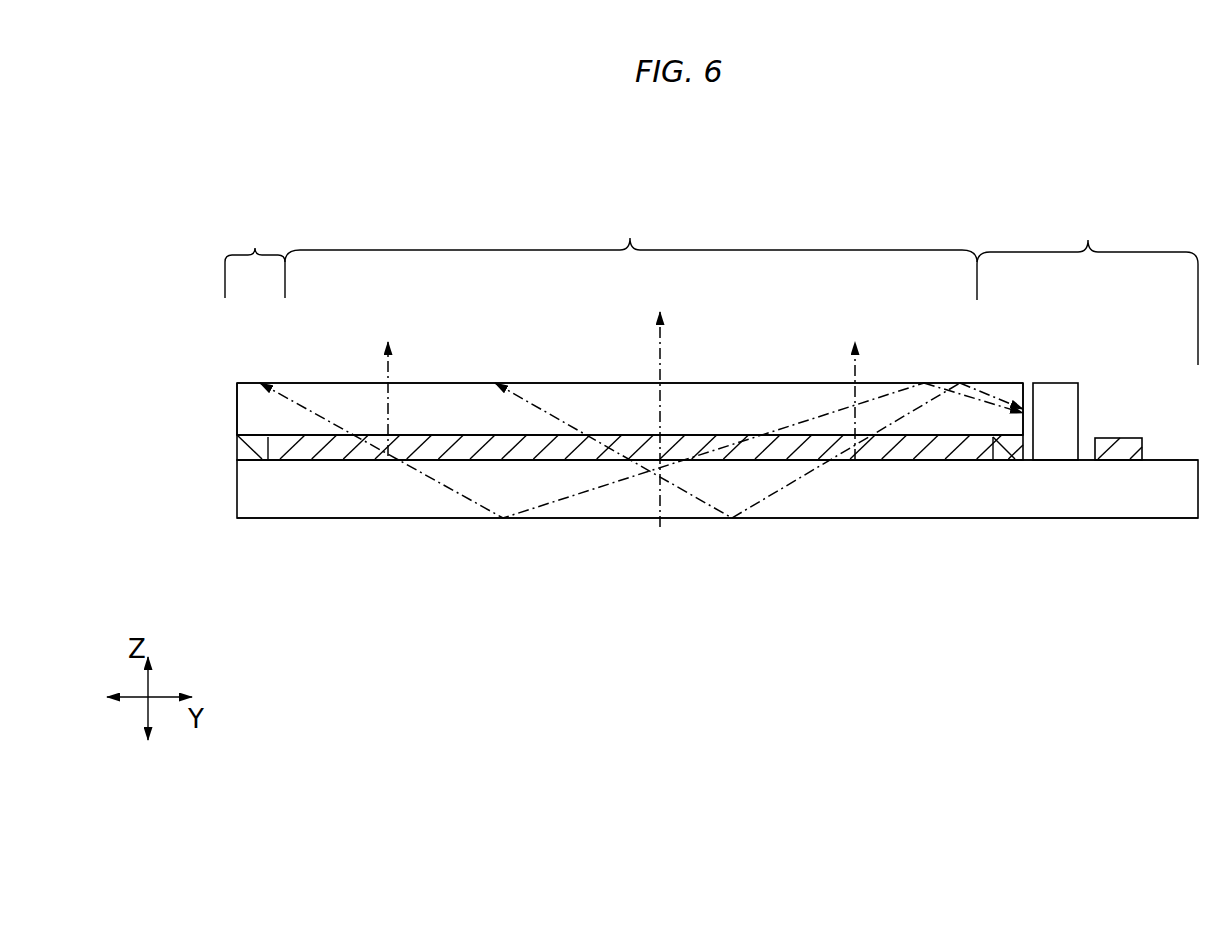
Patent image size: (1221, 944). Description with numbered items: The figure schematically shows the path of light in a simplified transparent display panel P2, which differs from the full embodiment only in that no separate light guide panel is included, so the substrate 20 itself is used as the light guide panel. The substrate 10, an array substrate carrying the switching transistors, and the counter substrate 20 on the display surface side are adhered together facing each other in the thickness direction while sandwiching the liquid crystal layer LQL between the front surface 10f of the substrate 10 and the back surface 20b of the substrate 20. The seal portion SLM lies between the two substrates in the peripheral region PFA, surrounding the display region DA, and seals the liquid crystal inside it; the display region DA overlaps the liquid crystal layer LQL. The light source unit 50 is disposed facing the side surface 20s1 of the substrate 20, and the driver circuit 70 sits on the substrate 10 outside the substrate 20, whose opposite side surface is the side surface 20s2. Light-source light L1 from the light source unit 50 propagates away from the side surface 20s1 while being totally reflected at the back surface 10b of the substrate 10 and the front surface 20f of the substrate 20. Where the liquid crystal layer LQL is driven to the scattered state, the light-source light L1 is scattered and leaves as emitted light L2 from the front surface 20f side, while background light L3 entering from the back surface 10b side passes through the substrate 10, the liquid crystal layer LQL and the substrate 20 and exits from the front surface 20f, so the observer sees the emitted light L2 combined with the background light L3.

The substrate 10 is at (263, 488).
The substrate 20 is at (262, 408).
The light source unit 50 is at (1050, 437).
The driver circuit 70 is at (1118, 450).
The back surface of the substrate 10b is at (518, 522).
The front surface of the substrate 10f is at (556, 458).
The back surface of the substrate 20b is at (498, 437).
The front surface of the substrate 20f is at (513, 381).
The side surface of the substrate 20s1 is at (1027, 405).
The second side surface of second substrate 20s2 is at (235, 403).
The seal portion SLM is at (250, 446).
The liquid crystal layer LQL is at (430, 455).
The light-source light L1 is at (938, 382).
The emitted light L2 is at (388, 400).
The background light L3 is at (660, 373).
The display panel P2 is at (711, 259).
The peripheral region PFA is at (711, 287).
The display region DA is at (631, 236).